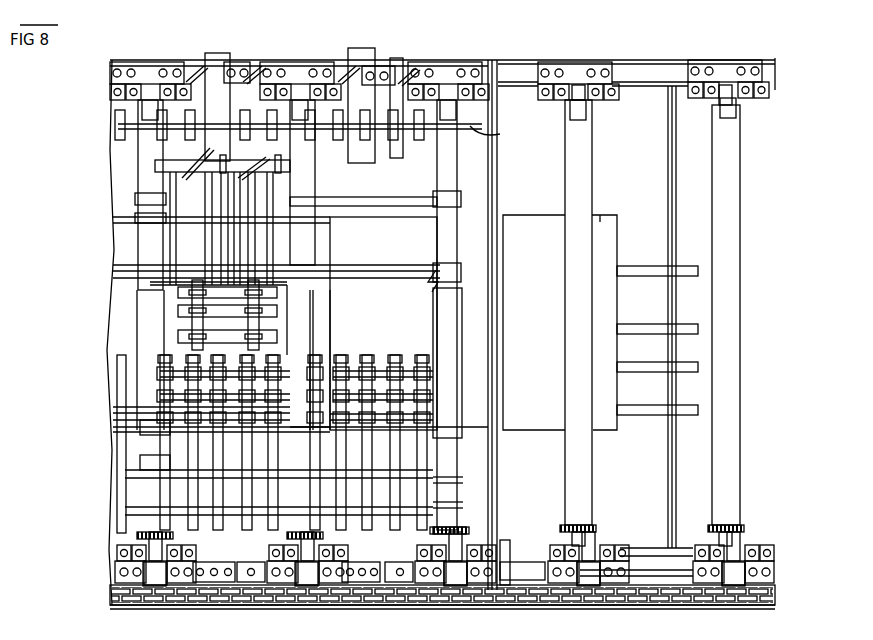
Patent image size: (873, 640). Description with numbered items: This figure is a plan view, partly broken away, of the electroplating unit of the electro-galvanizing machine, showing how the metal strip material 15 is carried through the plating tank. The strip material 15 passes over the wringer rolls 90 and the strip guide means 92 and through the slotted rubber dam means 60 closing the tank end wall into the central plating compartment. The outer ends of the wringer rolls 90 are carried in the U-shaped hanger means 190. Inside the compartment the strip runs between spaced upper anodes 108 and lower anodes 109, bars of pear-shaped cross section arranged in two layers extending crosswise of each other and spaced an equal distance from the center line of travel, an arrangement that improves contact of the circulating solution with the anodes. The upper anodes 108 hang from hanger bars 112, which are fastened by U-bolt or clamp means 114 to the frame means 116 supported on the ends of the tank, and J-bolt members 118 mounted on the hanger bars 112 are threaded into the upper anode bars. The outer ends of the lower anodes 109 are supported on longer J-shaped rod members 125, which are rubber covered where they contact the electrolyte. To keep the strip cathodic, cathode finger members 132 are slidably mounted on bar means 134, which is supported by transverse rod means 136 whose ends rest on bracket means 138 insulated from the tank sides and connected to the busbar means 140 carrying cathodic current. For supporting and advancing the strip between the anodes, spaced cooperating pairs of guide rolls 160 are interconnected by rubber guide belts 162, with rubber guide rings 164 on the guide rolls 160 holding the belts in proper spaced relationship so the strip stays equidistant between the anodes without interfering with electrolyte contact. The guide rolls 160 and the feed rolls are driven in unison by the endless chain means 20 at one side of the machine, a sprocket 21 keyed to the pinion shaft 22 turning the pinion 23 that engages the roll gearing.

The strip material 15 is at (602, 215).
The endless chain means 20 is at (512, 597).
The sprocket 21 is at (303, 602).
The pinion shaft 22 is at (292, 558).
The pinion 23 is at (290, 536).
The rubber dam means 60 is at (498, 212).
The wringer rolls 90 is at (588, 145).
The strip guide means 92 is at (654, 277).
The upper anodes 108 is at (180, 292).
The lower anodes 109 is at (292, 190).
The hanger bars 112 is at (292, 232).
The U-bolt or clamp means 114 is at (253, 160).
The frame means 116 is at (198, 60).
The J-bolt members 118 is at (283, 312).
The J-shaped rod members 125 is at (160, 165).
The cathode finger members 132 is at (410, 364).
The bar means 134 is at (382, 136).
The transverse rod means 136 is at (490, 134).
The bracket means 138 is at (386, 78).
The busbar means 140 is at (356, 62).
The guide rolls 160 is at (300, 172).
The rubber guide belts 162 is at (379, 268).
The rubber guide rings 164 is at (434, 285).
The U-shaped hanger means 190 is at (552, 562).